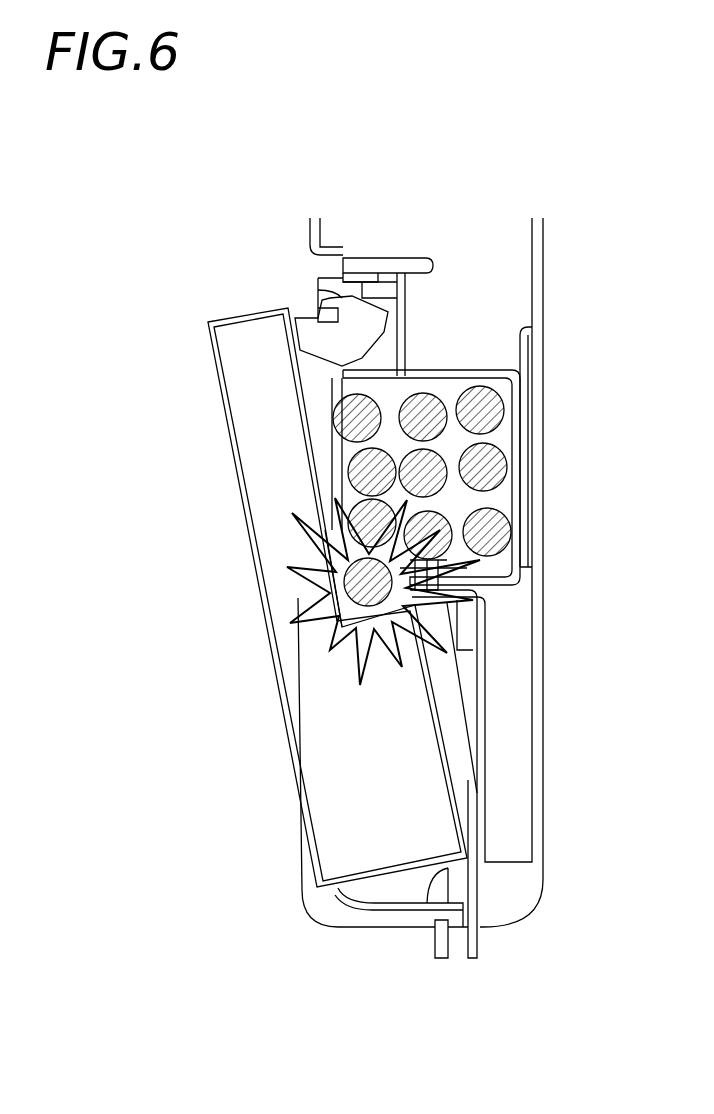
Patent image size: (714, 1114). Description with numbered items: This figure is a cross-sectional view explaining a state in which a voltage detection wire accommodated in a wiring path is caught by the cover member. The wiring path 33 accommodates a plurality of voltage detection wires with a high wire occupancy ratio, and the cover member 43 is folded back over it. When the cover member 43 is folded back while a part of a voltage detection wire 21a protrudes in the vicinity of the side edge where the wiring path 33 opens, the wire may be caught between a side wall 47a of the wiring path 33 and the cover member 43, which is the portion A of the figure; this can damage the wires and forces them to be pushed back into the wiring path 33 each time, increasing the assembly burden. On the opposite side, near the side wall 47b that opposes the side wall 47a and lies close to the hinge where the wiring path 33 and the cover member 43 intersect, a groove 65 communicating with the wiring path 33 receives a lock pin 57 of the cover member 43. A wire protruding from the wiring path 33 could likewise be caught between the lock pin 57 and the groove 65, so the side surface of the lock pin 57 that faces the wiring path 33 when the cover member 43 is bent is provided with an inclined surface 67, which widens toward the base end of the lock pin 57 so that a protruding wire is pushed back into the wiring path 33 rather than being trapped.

The cover member 43 is at (223, 462).
The lock pin 57 is at (312, 290).
The inclined surface 67 is at (396, 345).
The groove 65 is at (433, 385).
The side wall 47b is at (440, 378).
The wiring path 33 is at (490, 505).
The voltage detection wire 21a is at (312, 545).
The side wall 47a is at (412, 650).
The portion A is at (420, 652).